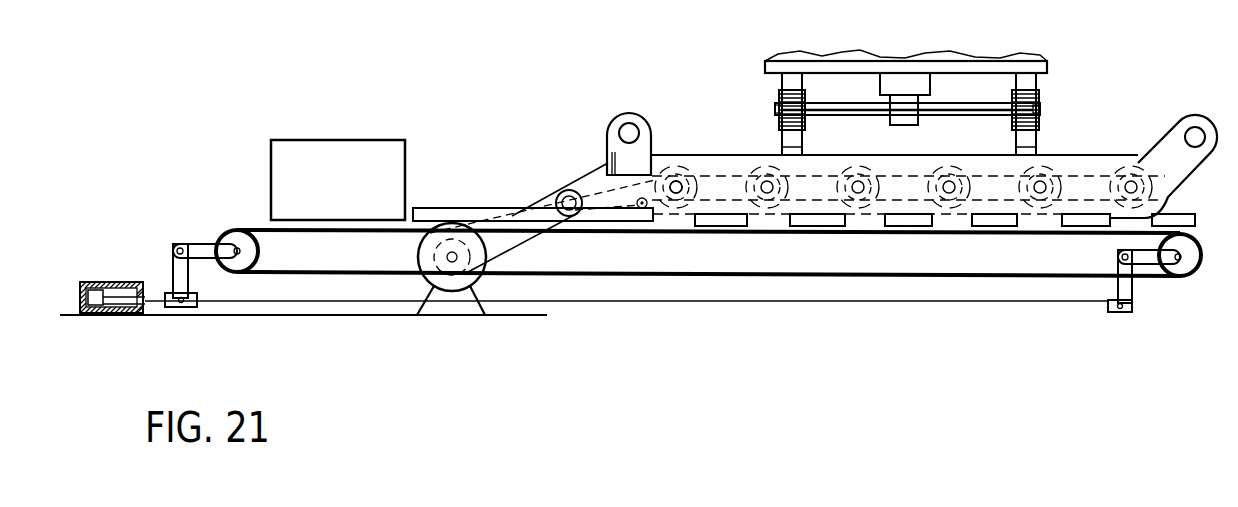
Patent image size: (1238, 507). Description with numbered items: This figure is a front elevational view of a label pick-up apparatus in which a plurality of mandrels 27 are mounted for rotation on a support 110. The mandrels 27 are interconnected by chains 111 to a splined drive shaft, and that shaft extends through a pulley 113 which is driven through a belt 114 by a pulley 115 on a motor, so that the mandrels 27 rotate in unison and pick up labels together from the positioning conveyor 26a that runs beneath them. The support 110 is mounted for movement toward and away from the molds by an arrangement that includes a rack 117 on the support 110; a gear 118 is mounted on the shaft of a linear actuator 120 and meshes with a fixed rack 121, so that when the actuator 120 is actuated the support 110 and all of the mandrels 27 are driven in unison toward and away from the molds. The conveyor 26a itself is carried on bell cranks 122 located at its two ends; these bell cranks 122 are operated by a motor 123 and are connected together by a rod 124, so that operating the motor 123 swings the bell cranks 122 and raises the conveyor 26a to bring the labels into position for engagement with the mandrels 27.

The positioning conveyor 26a is at (513, 216).
The mandrels 27 is at (1035, 172).
The support 110 is at (740, 153).
The chains 111 is at (700, 172).
The pulley 113 is at (572, 217).
The belt 114 is at (538, 196).
The pulley 115 is at (447, 257).
The rack 117 is at (1020, 142).
The gear 118 is at (1039, 92).
The linear actuator 120 is at (897, 117).
The fixed rack 121 is at (1040, 78).
The bell cranks 122 is at (198, 247).
The motor 123 is at (133, 280).
The rod 124 is at (283, 303).